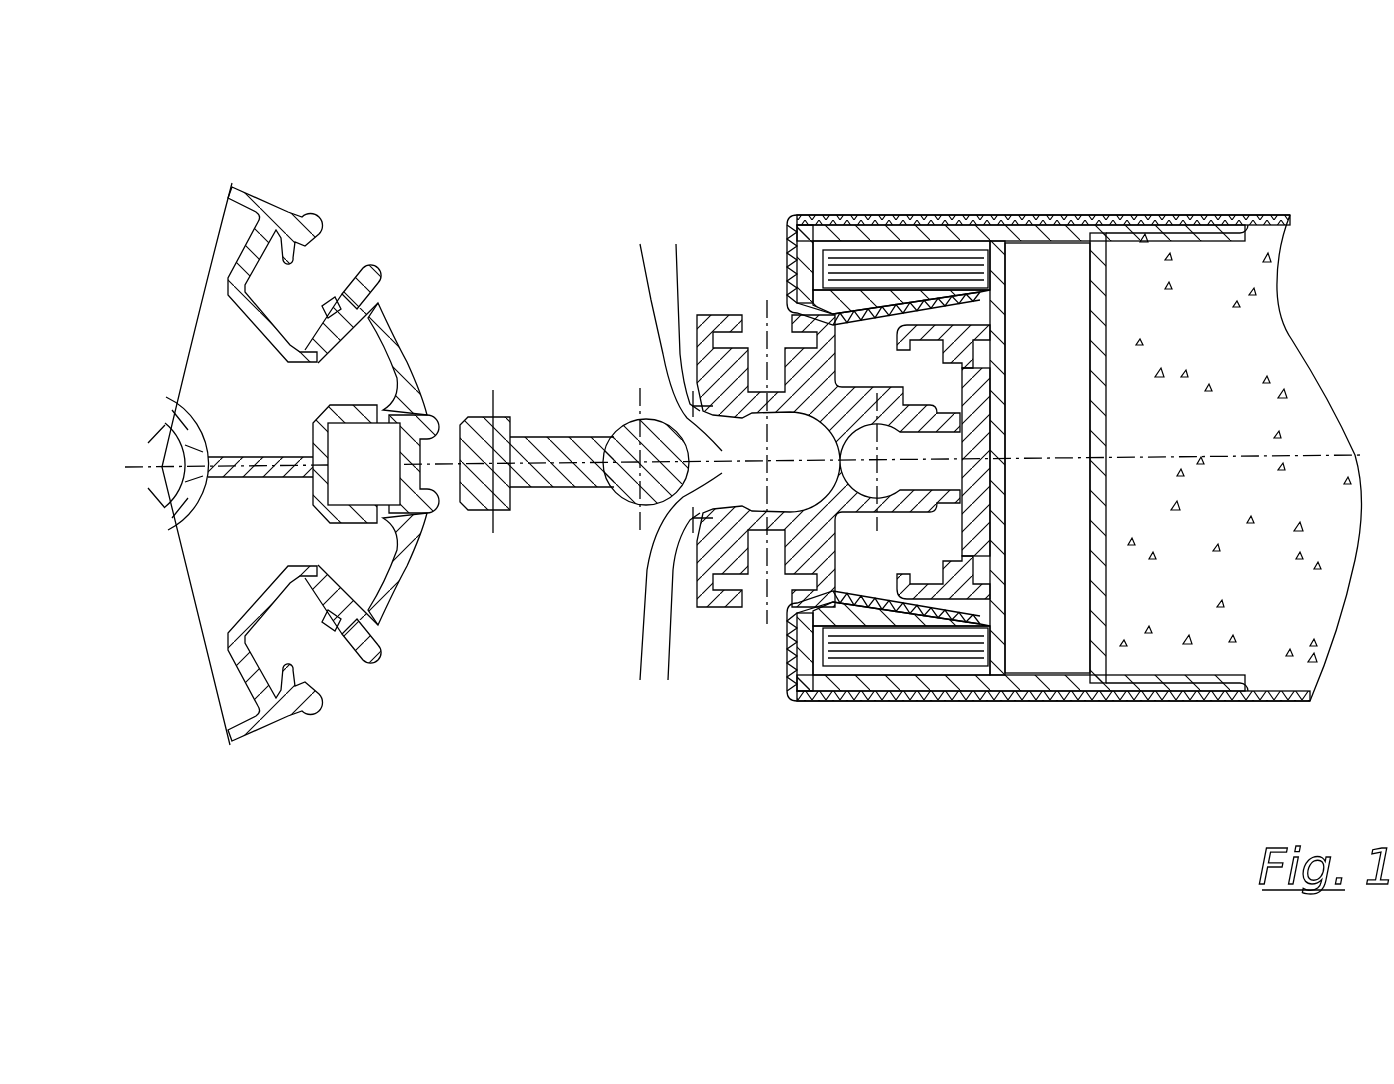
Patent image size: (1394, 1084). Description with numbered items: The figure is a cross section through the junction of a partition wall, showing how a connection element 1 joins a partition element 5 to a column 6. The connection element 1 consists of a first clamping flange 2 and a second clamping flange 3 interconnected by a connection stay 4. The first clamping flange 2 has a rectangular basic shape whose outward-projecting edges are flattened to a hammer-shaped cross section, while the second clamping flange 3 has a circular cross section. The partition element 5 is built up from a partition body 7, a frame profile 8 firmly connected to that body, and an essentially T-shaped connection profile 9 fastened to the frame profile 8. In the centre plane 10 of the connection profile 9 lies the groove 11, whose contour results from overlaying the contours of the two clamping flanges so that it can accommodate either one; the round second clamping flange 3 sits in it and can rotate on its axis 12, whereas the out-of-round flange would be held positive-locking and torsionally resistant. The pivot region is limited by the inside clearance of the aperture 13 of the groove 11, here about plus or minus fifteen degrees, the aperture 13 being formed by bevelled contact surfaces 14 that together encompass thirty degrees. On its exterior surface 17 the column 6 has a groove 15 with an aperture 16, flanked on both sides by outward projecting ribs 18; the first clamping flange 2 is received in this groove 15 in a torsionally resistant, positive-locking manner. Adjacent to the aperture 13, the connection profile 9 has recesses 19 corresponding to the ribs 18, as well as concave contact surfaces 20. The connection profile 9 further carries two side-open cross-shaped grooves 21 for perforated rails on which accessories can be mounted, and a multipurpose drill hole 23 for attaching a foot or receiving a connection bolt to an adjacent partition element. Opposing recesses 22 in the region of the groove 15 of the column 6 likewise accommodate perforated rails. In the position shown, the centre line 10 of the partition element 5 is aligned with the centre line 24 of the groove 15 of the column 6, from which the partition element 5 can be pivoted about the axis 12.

The connection element 1 is at (566, 366).
The first clamping flange 2 is at (480, 437).
The second clamping flange 3 is at (627, 493).
The connection stay 4 is at (547, 480).
The partition element 5 is at (1153, 770).
The column 6 is at (285, 133).
The partition body 7 is at (1183, 270).
The frame profile 8 is at (993, 247).
The connection profile 9 is at (795, 363).
The centre plane 10 is at (1043, 457).
The groove 11 is at (777, 483).
The axis 12 is at (655, 420).
The aperture 13 is at (640, 680).
The bevelled contact surfaces 14 is at (640, 244).
The groove 15 is at (353, 440).
The aperture 16 is at (426, 494).
The exterior surface 17 is at (407, 415).
The ribs 18 is at (433, 417).
The recesses 19 is at (668, 680).
The concave contact surfaces 20 is at (676, 244).
The cross-shaped grooves 21 is at (752, 583).
The recesses 22 is at (422, 478).
The multipurpose drill hole 23 is at (866, 424).
The centre line 24 is at (347, 470).